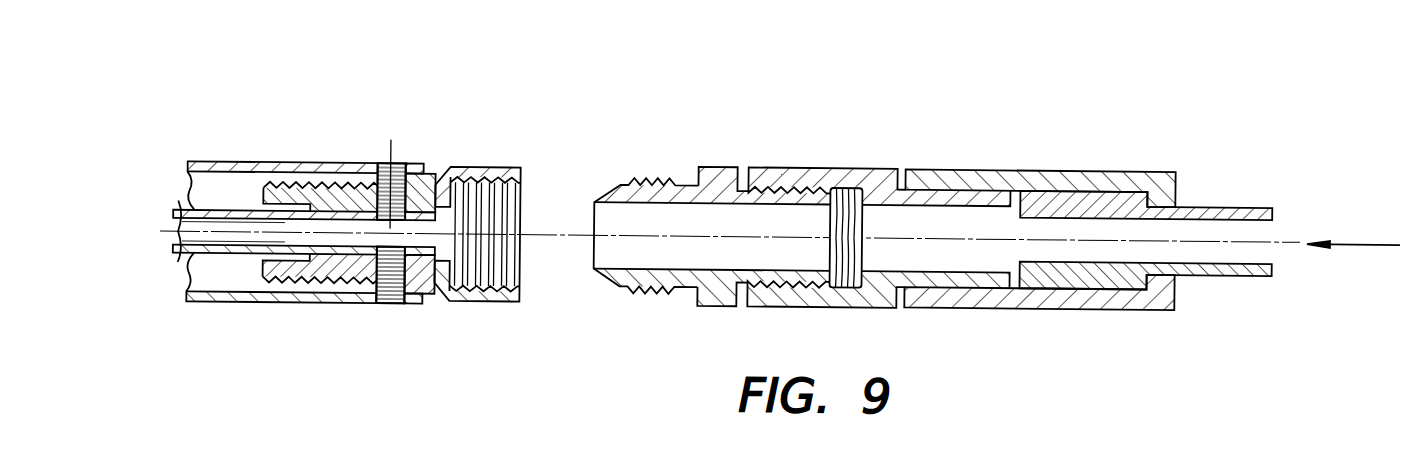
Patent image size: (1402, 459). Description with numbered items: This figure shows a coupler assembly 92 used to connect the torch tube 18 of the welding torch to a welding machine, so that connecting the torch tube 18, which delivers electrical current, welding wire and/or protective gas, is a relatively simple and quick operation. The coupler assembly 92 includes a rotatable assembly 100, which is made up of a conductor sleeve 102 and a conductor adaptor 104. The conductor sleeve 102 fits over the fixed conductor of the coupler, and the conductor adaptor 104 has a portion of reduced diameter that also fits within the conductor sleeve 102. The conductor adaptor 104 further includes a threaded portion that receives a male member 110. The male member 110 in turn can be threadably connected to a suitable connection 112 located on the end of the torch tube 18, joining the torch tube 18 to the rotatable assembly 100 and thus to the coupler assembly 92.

The torch tube 18 is at (289, 166).
The connection 112 is at (477, 168).
The male member 110 is at (650, 178).
The rotatable assembly 100 is at (1130, 108).
The conductor sleeve 102 is at (1140, 165).
The conductor adaptor 104 is at (798, 305).
The coupler assembly 92 is at (1139, 308).